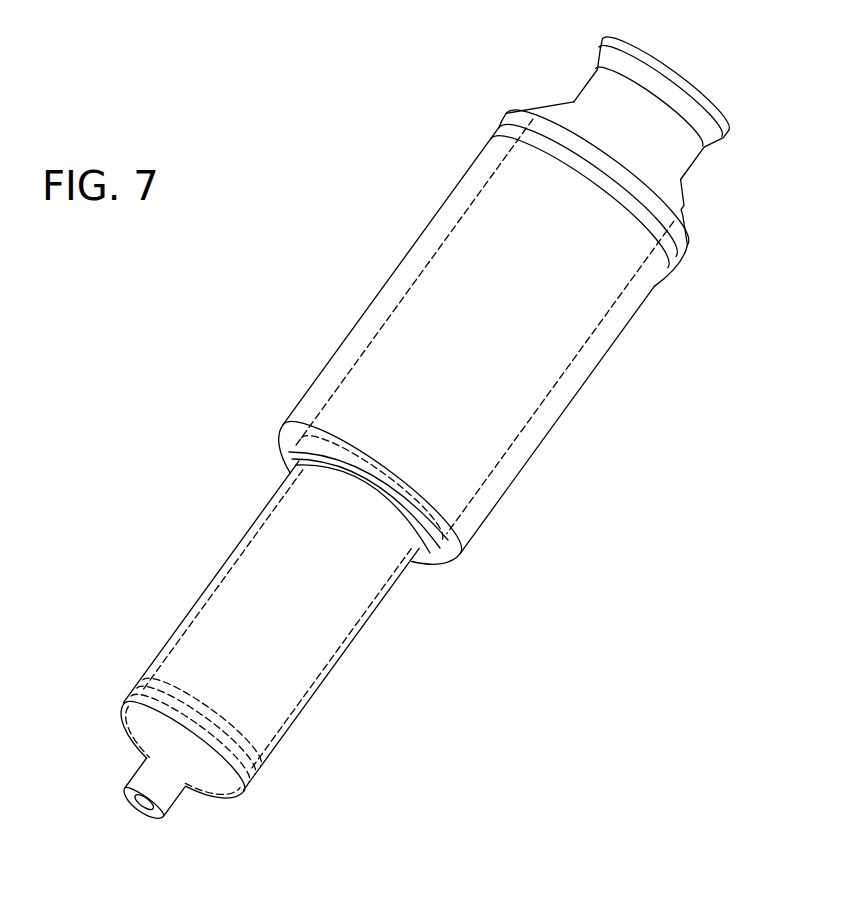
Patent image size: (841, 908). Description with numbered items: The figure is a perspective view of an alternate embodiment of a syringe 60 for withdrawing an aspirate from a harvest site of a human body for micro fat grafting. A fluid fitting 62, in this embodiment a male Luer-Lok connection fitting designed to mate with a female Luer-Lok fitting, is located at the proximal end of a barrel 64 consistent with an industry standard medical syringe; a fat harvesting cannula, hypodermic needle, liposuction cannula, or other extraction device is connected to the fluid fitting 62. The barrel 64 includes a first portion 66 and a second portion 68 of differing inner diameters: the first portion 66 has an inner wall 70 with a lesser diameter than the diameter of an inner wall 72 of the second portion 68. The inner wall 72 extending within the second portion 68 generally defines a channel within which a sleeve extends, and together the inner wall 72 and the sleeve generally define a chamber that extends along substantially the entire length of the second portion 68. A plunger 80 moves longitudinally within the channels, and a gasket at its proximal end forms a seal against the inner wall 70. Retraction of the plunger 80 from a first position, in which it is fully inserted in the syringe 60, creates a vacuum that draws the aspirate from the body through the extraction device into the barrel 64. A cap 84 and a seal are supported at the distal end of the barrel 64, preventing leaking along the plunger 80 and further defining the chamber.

The syringe 60 is at (413, 157).
The fluid fitting 62 is at (132, 814).
The barrel 64 is at (378, 632).
The first portion 66 is at (300, 718).
The second portion 68 is at (562, 413).
The inner wall 70 is at (240, 560).
The inner wall 72 is at (400, 290).
The plunger 80 is at (698, 148).
The cap 84 is at (547, 107).